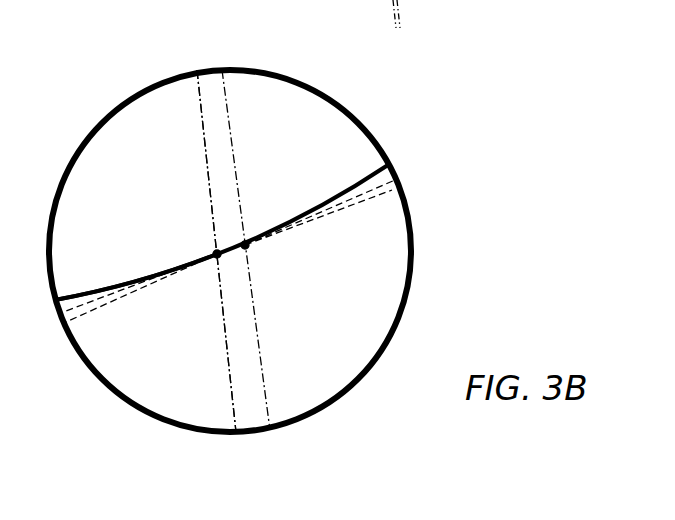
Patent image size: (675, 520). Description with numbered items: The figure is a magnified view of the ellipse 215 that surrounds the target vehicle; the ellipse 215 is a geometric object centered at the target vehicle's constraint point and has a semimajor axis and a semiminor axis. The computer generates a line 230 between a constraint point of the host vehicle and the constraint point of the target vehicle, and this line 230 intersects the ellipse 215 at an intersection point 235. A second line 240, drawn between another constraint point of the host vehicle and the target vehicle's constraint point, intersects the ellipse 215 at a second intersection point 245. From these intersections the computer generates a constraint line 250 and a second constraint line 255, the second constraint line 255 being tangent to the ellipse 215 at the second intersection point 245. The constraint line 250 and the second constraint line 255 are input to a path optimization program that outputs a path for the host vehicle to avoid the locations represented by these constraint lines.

The ellipse 215 is at (92, 293).
The line 230 is at (238, 168).
The intersection point 235 is at (247, 250).
The second line 240 is at (212, 203).
The second intersection point 245 is at (212, 263).
The constraint line 250 is at (375, 168).
The second constraint line 255 is at (365, 198).